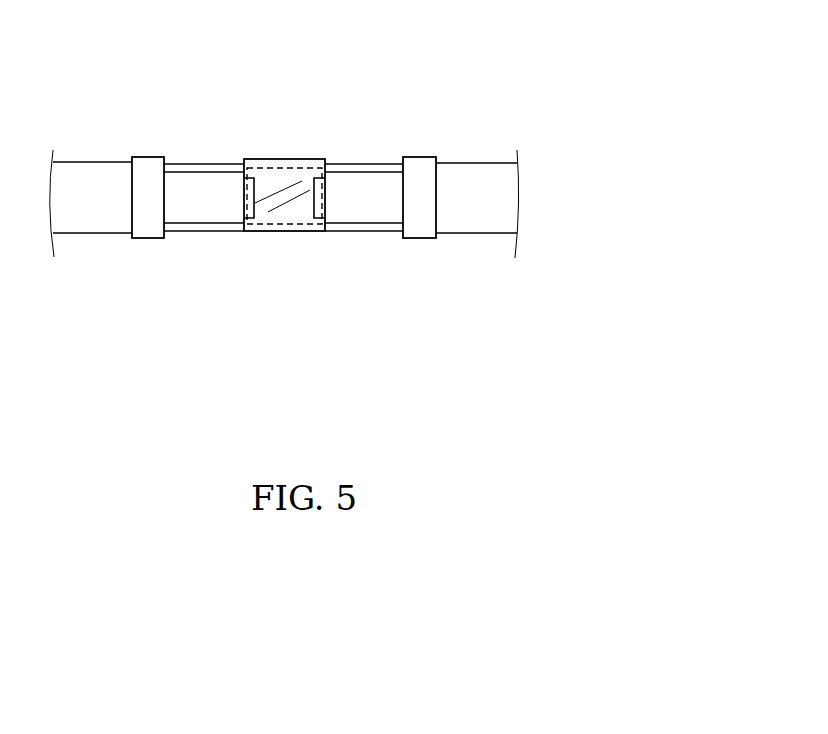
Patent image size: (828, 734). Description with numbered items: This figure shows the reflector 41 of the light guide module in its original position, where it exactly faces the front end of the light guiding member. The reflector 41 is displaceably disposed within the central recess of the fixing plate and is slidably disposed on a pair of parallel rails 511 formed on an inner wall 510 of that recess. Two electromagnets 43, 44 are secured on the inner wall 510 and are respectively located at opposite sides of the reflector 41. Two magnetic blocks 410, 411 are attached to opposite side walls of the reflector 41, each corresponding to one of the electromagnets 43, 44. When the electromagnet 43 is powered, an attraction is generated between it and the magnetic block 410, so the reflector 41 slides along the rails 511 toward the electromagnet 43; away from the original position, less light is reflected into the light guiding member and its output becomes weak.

The reflector 41 is at (279, 137).
The magnetic block 410 is at (321, 170).
The magnetic block 411 is at (249, 165).
The electromagnet 43 is at (416, 178).
The electromagnet 44 is at (143, 177).
The inner wall 510 is at (352, 212).
The rails 511 is at (383, 168).